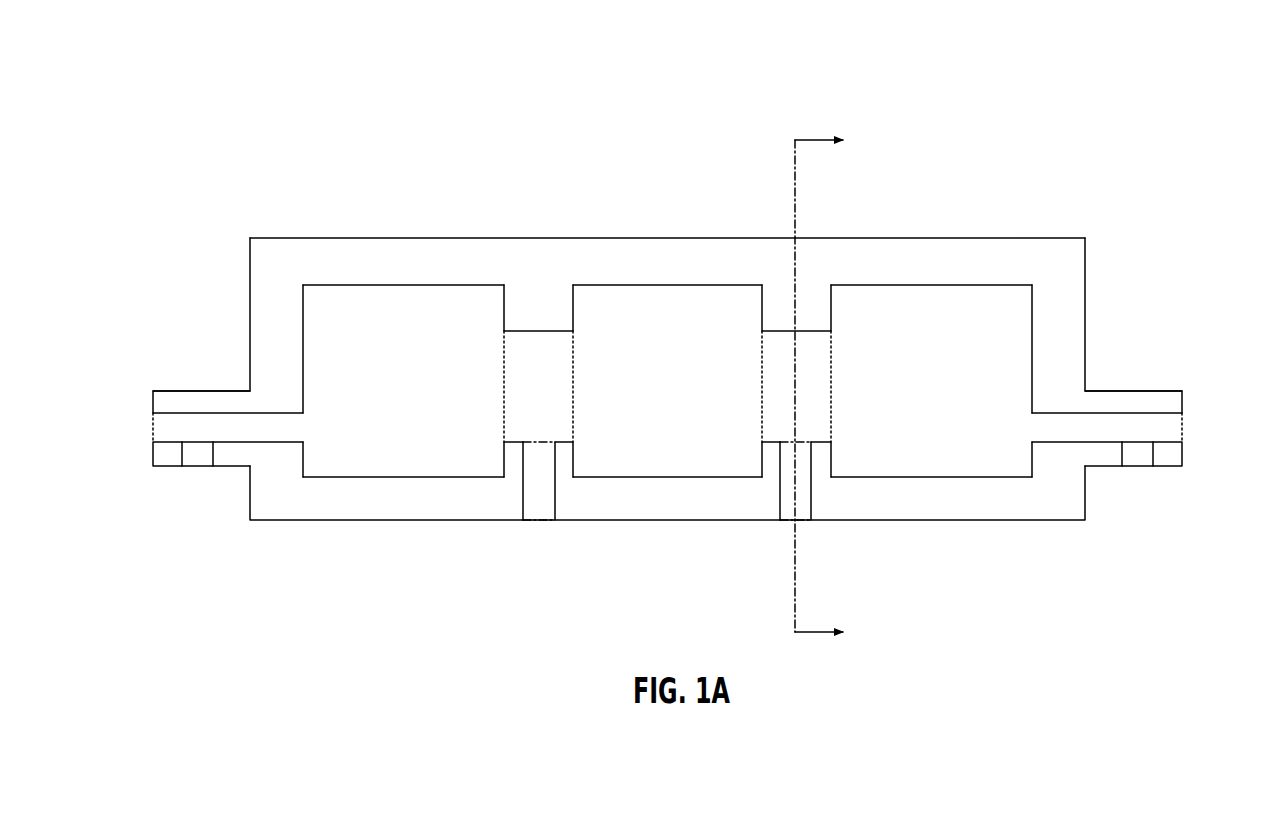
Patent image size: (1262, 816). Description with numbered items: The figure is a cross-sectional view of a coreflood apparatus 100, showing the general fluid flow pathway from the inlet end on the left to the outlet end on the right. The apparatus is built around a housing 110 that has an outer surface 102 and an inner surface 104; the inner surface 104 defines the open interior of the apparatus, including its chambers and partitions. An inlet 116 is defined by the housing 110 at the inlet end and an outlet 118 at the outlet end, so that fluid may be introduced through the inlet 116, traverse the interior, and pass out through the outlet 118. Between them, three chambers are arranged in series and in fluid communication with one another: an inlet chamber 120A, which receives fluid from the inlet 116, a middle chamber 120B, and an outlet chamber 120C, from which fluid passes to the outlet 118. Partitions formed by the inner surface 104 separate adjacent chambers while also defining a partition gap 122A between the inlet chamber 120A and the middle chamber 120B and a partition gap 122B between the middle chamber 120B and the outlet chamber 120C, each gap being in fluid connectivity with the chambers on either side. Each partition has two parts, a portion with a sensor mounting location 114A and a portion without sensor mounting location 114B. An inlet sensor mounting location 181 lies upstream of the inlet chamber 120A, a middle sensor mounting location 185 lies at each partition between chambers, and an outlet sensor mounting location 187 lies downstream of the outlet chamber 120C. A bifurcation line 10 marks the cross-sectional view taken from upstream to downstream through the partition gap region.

The coreflood apparatus 100 is at (165, 103).
The bifurcation line 10 is at (805, 138).
The housing 110 is at (397, 252).
The outer surface 102 is at (250, 267).
The inner surface 104 is at (303, 353).
The inlet 116 is at (152, 432).
The outlet 118 is at (1185, 431).
The inlet sensor mounting location 181 is at (199, 470).
The outlet sensor mounting location 187 is at (1135, 458).
The inlet chamber 120A is at (440, 391).
The middle chamber 120B is at (694, 391).
The outlet chamber 120C is at (948, 391).
The partition gap 122A is at (566, 391).
The partition gap 122B is at (825, 391).
The portion of the partition with a sensor mounting location 114A is at (503, 443).
The portion of the partition without sensor mounting location 114B is at (503, 286).
The middle sensor mounting location 185 is at (538, 512).